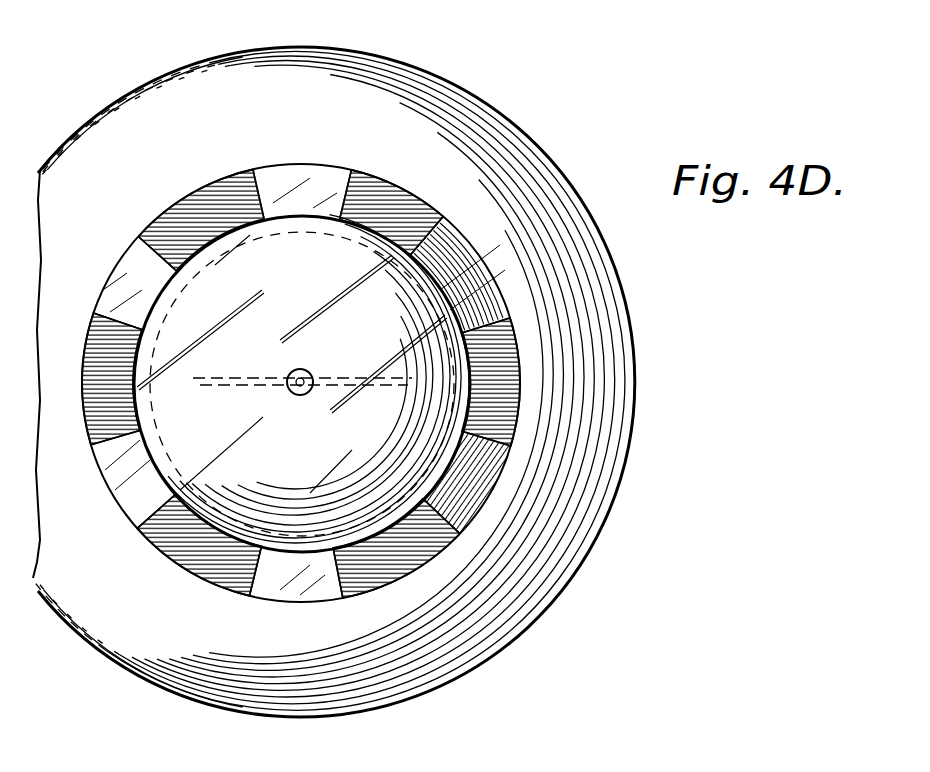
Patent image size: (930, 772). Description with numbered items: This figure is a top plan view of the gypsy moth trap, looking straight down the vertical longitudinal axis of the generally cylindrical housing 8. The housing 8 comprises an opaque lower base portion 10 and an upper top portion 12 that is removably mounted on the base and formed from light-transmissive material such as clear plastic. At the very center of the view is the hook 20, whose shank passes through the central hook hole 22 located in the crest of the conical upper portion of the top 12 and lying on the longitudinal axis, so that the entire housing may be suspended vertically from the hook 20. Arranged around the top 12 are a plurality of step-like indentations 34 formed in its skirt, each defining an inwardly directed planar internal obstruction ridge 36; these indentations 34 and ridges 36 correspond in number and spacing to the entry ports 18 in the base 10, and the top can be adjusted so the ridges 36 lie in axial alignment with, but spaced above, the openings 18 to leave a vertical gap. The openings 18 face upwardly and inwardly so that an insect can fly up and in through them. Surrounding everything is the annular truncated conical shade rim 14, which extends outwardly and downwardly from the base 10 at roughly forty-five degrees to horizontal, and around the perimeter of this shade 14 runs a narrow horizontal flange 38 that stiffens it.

The housing 8 is at (607, 153).
The base portion 10 is at (194, 712).
The top portion 12 is at (331, 158).
The shade rim 14 is at (575, 540).
The entry ports 18 is at (299, 379).
The hook 20 is at (320, 377).
The hook hole 22 is at (294, 377).
The step-like indentations 34 is at (262, 222).
The internal obstruction ridges 36 is at (212, 178).
The horizontal flange 38 is at (632, 413).